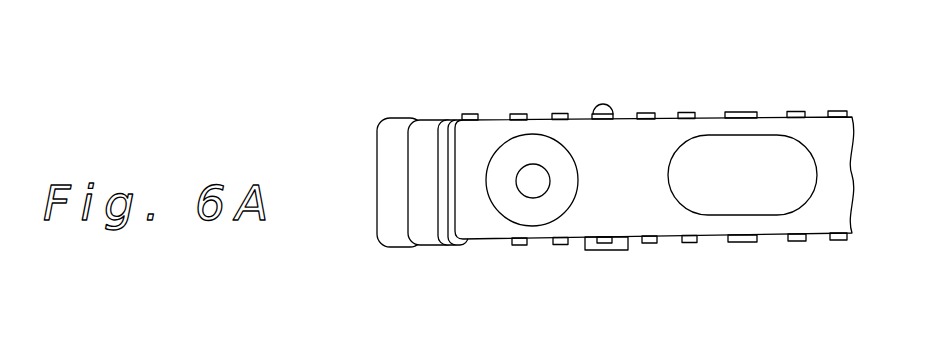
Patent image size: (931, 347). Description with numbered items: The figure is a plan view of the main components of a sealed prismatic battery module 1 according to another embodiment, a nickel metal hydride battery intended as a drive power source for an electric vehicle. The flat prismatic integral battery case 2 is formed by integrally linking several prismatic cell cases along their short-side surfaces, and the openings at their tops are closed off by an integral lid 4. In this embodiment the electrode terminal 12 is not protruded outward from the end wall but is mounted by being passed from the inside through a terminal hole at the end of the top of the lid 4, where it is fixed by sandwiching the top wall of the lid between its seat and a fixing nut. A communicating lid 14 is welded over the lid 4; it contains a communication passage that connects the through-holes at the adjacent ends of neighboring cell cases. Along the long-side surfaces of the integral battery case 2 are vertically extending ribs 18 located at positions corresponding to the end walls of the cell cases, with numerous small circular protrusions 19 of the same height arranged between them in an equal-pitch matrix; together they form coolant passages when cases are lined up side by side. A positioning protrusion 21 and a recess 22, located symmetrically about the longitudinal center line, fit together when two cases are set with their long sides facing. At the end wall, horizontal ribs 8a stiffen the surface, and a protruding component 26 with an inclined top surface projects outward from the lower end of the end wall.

The sealed prismatic battery module 1 is at (348, 132).
The integral battery case 2 is at (427, 110).
The integral lid 4 is at (623, 162).
The horizontal ribs 8a is at (438, 216).
The electrode terminal 12 is at (533, 183).
The communicating lid 14 is at (757, 172).
The ribs 18 is at (468, 114).
The circular protrusions 19 is at (560, 114).
The positioning protrusions 21 is at (602, 108).
The recesses 22 is at (617, 243).
The protruding component 26 is at (395, 213).